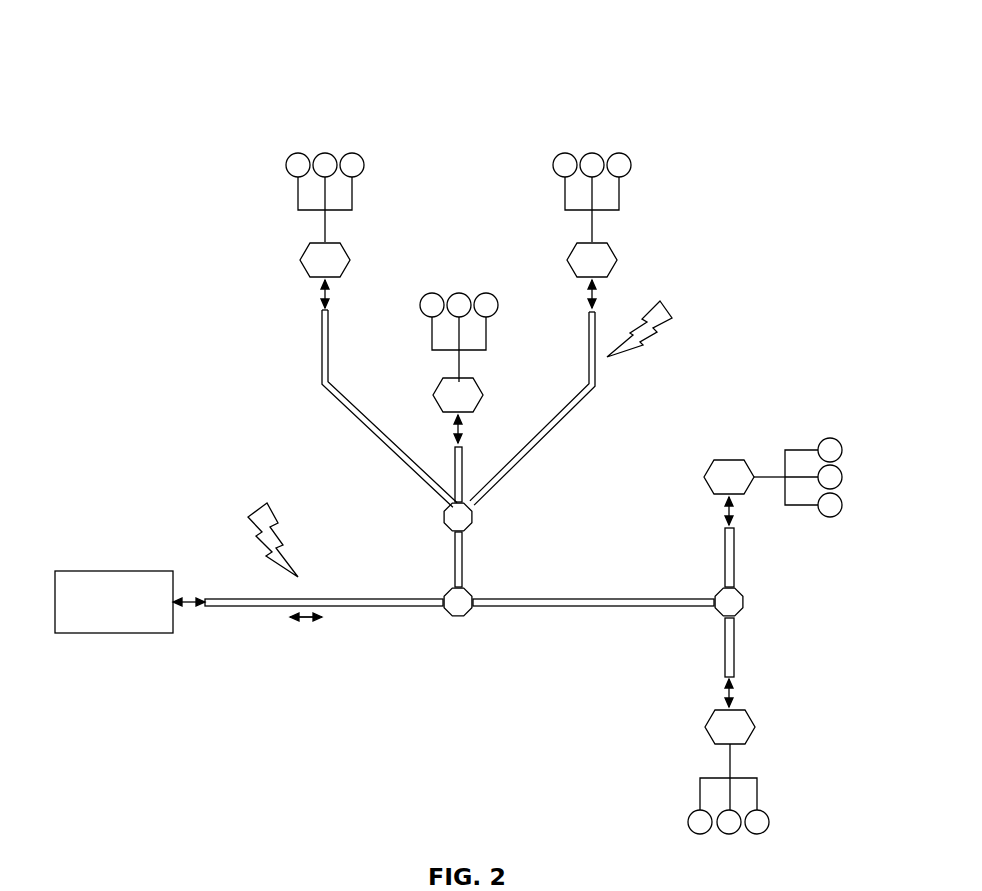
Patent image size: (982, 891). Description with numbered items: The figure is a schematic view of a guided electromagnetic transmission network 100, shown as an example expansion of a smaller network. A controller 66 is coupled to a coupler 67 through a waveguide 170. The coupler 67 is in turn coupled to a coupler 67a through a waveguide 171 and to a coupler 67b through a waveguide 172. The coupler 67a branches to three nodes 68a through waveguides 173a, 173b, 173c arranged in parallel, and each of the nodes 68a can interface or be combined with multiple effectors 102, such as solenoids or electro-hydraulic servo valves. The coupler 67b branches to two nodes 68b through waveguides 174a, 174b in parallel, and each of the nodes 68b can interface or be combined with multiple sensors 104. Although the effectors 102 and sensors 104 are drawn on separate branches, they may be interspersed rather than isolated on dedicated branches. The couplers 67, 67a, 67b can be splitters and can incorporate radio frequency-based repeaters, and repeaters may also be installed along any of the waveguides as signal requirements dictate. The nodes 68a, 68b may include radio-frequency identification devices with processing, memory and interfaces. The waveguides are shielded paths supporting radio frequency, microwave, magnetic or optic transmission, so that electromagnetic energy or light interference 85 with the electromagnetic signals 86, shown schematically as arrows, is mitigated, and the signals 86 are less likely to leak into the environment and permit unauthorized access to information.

The guided electromagnetic transmission network 100 is at (203, 52).
The controller 66 is at (128, 615).
The coupler 67 is at (455, 616).
The coupler 67a is at (470, 528).
The coupler 67b is at (746, 598).
The node 68a is at (343, 252).
The node 68b is at (730, 457).
The electromagnetic energy or light interference 85 is at (271, 503).
The electromagnetic signals 86 is at (352, 620).
The effector 102 is at (353, 158).
The sensor 104 is at (828, 440).
The waveguide 170 is at (243, 608).
The waveguide 171 is at (455, 552).
The waveguide 172 is at (651, 620).
The waveguide 173a is at (322, 348).
The waveguide 173b is at (453, 470).
The waveguide 173c is at (533, 452).
The waveguide 174a is at (724, 556).
The waveguide 174b is at (724, 648).